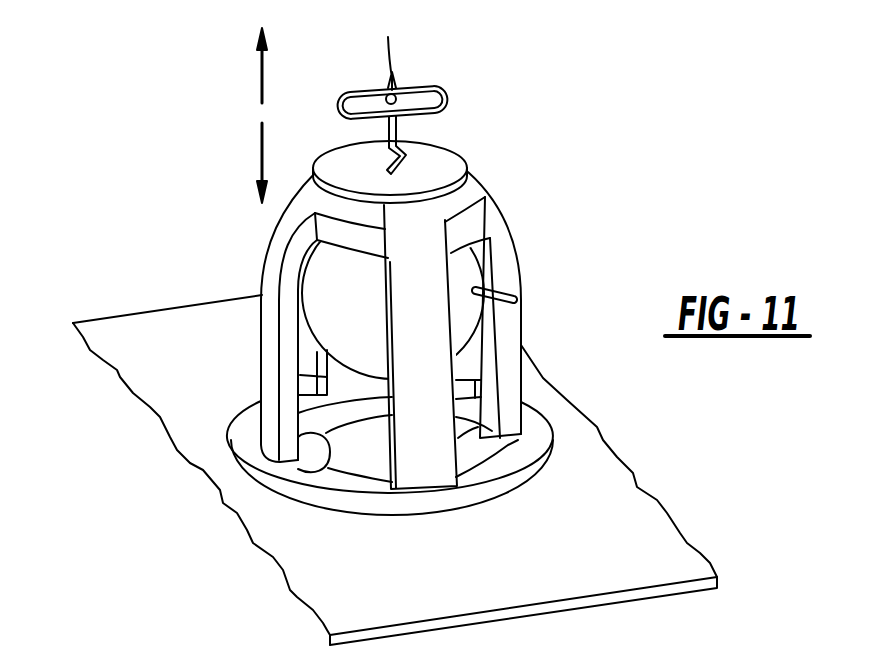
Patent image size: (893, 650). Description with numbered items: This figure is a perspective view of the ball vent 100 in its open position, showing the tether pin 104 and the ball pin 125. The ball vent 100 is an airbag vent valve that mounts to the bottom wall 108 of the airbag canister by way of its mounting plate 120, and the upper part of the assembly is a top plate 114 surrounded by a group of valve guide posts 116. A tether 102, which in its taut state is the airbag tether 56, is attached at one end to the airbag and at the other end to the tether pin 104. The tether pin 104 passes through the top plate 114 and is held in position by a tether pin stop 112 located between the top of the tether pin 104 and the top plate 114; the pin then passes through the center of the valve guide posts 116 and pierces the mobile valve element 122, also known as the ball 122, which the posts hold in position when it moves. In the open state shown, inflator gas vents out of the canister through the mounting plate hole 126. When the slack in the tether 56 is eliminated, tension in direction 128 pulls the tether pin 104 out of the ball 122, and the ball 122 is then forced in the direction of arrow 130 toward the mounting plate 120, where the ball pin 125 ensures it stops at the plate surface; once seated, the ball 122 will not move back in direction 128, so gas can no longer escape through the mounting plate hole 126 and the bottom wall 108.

The ball vent 100 is at (110, 193).
The airbag tether 56 is at (397, 53).
The tether 102 is at (438, 62).
The tether pin 104 is at (445, 88).
The bottom wall 108 is at (622, 533).
The tether pin stop 112 is at (406, 160).
The top plate 114 is at (340, 147).
The valve guide posts 116 is at (505, 212).
The mounting plate 120 is at (553, 446).
The mobile valve element (ball) 122 is at (318, 326).
The ball pin 125 is at (516, 296).
The mounting plate hole 126 is at (330, 468).
The direction (of tether tension) 128 is at (261, 82).
The arrow (direction of valve element travel) 130 is at (261, 158).